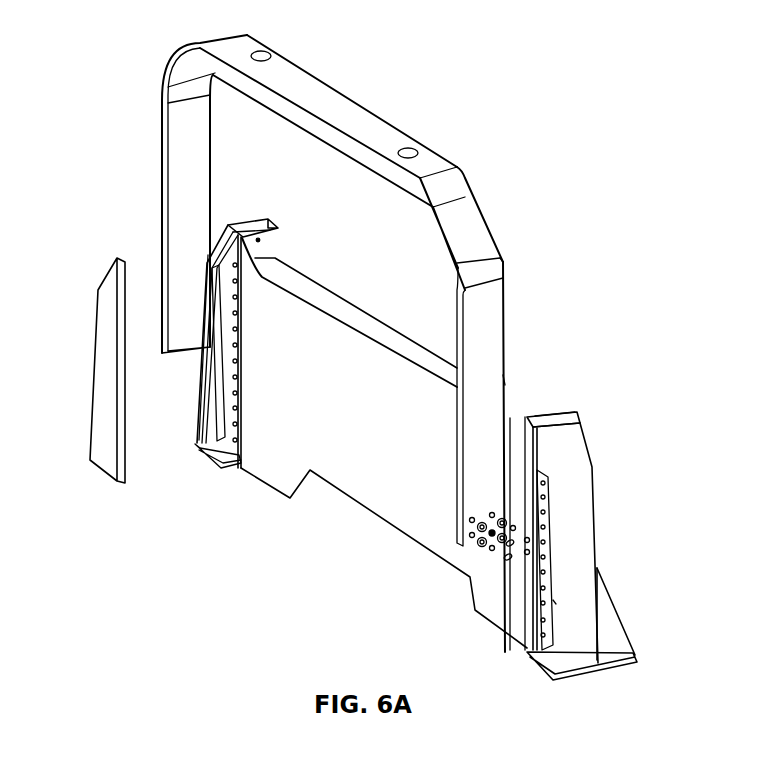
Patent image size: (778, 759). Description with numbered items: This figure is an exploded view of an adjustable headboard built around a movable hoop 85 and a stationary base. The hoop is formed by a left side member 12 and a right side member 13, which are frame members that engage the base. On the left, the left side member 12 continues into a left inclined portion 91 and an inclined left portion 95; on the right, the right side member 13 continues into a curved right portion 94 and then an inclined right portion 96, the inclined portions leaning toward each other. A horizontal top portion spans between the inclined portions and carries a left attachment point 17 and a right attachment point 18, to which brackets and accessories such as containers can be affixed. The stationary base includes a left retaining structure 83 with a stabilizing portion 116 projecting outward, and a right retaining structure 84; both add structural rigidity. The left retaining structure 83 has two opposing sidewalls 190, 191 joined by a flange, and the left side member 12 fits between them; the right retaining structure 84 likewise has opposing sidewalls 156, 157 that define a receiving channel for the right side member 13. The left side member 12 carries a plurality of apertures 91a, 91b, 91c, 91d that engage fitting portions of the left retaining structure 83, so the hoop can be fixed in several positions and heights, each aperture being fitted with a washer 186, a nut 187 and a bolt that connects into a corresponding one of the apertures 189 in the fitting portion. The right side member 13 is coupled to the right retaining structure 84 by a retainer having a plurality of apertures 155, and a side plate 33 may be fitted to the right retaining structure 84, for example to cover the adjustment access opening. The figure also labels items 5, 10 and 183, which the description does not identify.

The lower panel 5 is at (358, 500).
The panel 10 is at (400, 366).
The left side member 12 is at (507, 321).
The right side member 13 is at (210, 112).
The left attachment point 17 is at (266, 53).
The right attachment point 18 is at (413, 150).
The side plate 33 is at (97, 318).
The left retaining structure 83 is at (590, 454).
The right retaining structure 84 is at (202, 382).
The movable hoop 85 is at (507, 378).
The left inclined portion 91 is at (506, 273).
The aperture 91a is at (470, 518).
The aperture 91b is at (490, 512).
The aperture 91c is at (478, 543).
The aperture 91d is at (498, 542).
The curved right portion 94 is at (160, 124).
The inclined left portion 95 is at (485, 211).
The inclined right portion 96 is at (185, 60).
The stabilizing portion 116 is at (633, 649).
The plurality of apertures 155 is at (240, 407).
The sidewall 156 is at (260, 240).
The sidewall 157 is at (255, 224).
The bracket flange 183 is at (556, 603).
The washer 186 is at (506, 521).
The nut 187 is at (514, 528).
The plurality of apertures 189 is at (545, 621).
The sidewall 190 is at (560, 411).
The sidewall 191 is at (585, 418).